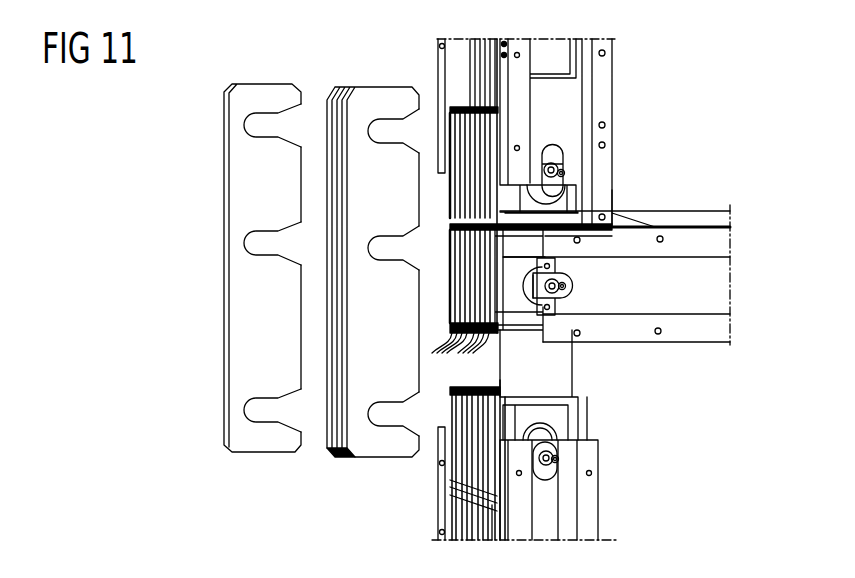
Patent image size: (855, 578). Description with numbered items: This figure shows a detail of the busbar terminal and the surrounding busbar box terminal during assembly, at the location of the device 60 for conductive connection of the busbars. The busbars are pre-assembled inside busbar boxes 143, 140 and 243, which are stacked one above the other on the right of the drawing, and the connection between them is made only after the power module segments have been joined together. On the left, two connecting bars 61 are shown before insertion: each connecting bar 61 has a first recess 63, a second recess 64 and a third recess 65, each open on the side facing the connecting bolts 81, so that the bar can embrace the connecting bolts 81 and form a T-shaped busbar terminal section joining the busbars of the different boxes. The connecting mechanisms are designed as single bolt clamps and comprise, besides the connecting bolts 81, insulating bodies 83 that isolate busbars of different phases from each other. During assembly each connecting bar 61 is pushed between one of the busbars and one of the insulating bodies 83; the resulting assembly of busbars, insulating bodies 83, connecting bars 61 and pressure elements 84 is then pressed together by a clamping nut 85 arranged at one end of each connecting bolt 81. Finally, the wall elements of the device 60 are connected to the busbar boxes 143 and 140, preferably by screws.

The device for conductive connection of the busbars 60 is at (413, 70).
The connecting bar 61 is at (260, 446).
The first recess 63 is at (262, 243).
The second recess 64 is at (262, 411).
The third recess 65 is at (262, 125).
The connecting bolt 81 is at (566, 174).
The insulating body 83 is at (455, 357).
The pressure element 84 is at (524, 288).
The clamping nut 85 is at (565, 157).
The busbar box 140 is at (734, 281).
The busbar box 143 is at (562, 100).
The busbar box 243 is at (590, 521).